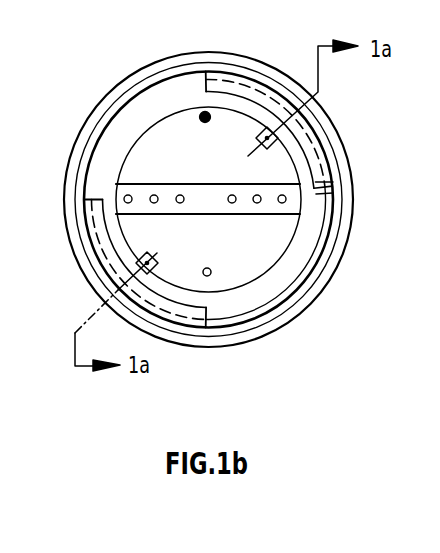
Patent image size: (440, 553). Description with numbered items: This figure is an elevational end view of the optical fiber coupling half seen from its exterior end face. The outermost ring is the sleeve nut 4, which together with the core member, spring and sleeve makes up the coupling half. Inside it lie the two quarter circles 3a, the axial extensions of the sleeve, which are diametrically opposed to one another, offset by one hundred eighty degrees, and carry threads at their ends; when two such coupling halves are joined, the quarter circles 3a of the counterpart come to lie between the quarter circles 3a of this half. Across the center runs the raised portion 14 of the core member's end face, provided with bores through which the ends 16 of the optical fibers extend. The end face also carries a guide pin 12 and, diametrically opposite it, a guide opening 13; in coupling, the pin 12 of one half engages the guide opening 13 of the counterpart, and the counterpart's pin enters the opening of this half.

The quarter circles 3a is at (242, 80).
The sleeve nut 4 is at (334, 257).
The guide pin 12 is at (203, 113).
The guide opening 13 is at (209, 276).
The raised portion 14 is at (288, 186).
The ends of fibers 16 is at (125, 201).